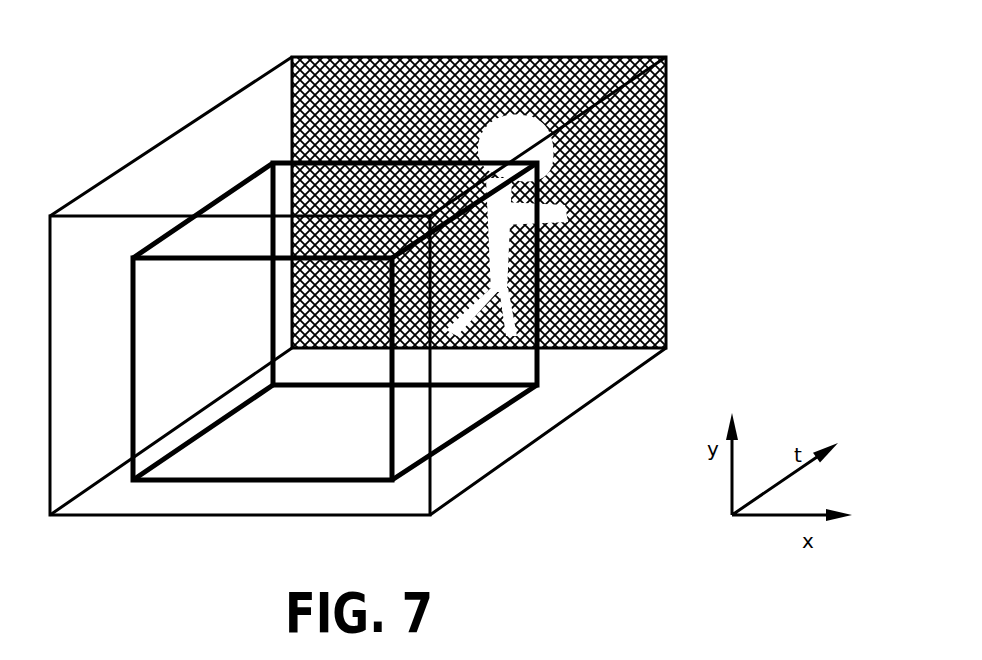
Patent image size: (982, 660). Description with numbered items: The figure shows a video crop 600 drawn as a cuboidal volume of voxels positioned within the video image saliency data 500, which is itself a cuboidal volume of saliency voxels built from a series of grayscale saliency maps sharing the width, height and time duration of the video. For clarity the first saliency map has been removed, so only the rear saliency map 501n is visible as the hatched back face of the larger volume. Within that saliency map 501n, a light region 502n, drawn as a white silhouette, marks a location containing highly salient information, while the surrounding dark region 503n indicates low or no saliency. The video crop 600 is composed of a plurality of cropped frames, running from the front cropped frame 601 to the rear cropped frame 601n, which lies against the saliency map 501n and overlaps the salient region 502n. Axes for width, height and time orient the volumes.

The video image saliency data 500 is at (226, 100).
The saliency map 501n is at (540, 182).
The region 502n is at (483, 130).
The region 503n is at (667, 317).
The video crop 600 is at (385, 300).
The cropped frame 601 is at (392, 466).
The cropped frame 601n is at (540, 372).